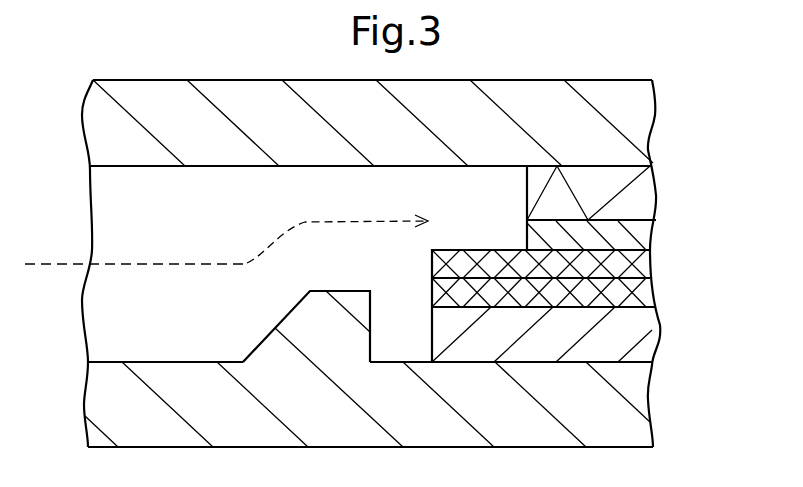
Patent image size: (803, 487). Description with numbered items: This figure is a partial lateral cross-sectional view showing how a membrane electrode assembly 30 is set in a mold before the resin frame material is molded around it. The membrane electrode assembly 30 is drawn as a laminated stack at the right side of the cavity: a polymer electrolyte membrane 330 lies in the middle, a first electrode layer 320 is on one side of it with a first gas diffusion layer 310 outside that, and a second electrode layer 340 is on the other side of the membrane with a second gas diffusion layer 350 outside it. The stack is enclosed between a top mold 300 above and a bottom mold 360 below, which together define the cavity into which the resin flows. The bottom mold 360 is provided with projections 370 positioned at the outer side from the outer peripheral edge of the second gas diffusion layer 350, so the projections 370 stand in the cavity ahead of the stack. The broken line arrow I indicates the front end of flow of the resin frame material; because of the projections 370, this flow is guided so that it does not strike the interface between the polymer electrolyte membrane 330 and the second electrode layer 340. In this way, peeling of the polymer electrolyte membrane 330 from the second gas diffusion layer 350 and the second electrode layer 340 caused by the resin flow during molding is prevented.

The membrane electrode assembly 30 is at (747, 168).
The top mold 300 is at (630, 123).
The first gas diffusion layer 310 is at (633, 200).
The first electrode layer 320 is at (642, 238).
The polymer electrolyte membrane 330 is at (640, 270).
The second electrode layer 340 is at (637, 295).
The second gas diffusion layer 350 is at (637, 338).
The bottom mold 360 is at (632, 410).
The projections 370 is at (276, 322).
The front end of flow I is at (128, 264).